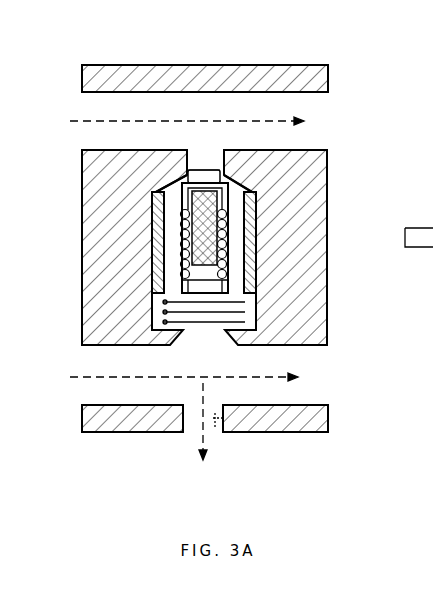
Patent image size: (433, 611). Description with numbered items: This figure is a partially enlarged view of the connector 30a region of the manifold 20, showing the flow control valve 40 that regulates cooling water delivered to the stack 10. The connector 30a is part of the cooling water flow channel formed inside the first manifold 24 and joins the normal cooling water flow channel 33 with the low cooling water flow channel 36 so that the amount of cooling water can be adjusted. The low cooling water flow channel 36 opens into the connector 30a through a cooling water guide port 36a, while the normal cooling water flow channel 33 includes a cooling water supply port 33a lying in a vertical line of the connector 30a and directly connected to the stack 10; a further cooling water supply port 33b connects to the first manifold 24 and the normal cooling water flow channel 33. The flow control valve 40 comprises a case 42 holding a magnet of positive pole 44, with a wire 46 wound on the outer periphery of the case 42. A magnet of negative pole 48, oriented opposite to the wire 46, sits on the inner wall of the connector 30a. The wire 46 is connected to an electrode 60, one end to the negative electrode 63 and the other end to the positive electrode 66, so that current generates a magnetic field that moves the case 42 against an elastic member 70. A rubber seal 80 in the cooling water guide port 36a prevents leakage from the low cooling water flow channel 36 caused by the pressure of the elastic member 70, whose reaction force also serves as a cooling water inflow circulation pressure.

The stack 10 is at (167, 433).
The manifold 20 is at (293, 55).
The first manifold 24 is at (217, 65).
The low cooling water flow channel 36 is at (283, 106).
The cooling water guide port 36a is at (203, 162).
The connector 30a is at (167, 231).
The normal cooling water flow channel 33 is at (160, 353).
The cooling water supply port 33a is at (197, 335).
The cooling water supply port 33b is at (227, 420).
The flow control valve 40 is at (298, 207).
The case 42 is at (222, 176).
The magnet of positive pole 44 is at (228, 187).
The wire 46 is at (218, 212).
The magnet of negative pole 48 is at (227, 240).
The electrode 60 is at (283, 255).
The negative electrode 63 is at (252, 262).
The positive electrode 66 is at (250, 318).
The elastic member 70 is at (163, 312).
The rubber seal 80 is at (185, 177).